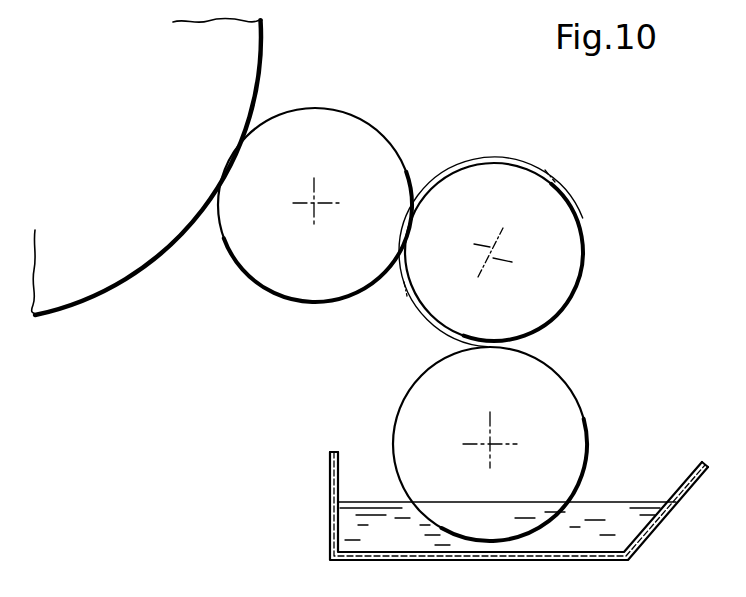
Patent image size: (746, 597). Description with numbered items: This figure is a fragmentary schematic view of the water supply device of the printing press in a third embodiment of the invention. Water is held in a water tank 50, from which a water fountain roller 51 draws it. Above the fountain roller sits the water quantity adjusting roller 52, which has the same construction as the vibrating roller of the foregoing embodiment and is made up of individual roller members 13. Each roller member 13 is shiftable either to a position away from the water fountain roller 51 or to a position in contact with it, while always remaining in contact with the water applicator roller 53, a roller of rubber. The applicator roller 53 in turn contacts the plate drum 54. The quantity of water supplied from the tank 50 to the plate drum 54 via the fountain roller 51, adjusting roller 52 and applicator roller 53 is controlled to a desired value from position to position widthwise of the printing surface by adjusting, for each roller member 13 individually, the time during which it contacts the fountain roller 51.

The roller member 13 is at (542, 177).
The water tank 50 is at (330, 477).
The water fountain roller 51 is at (580, 411).
The water quantity adjusting roller 52 is at (512, 162).
The water applicator roller 53 is at (370, 124).
The plate drum 54 is at (128, 277).